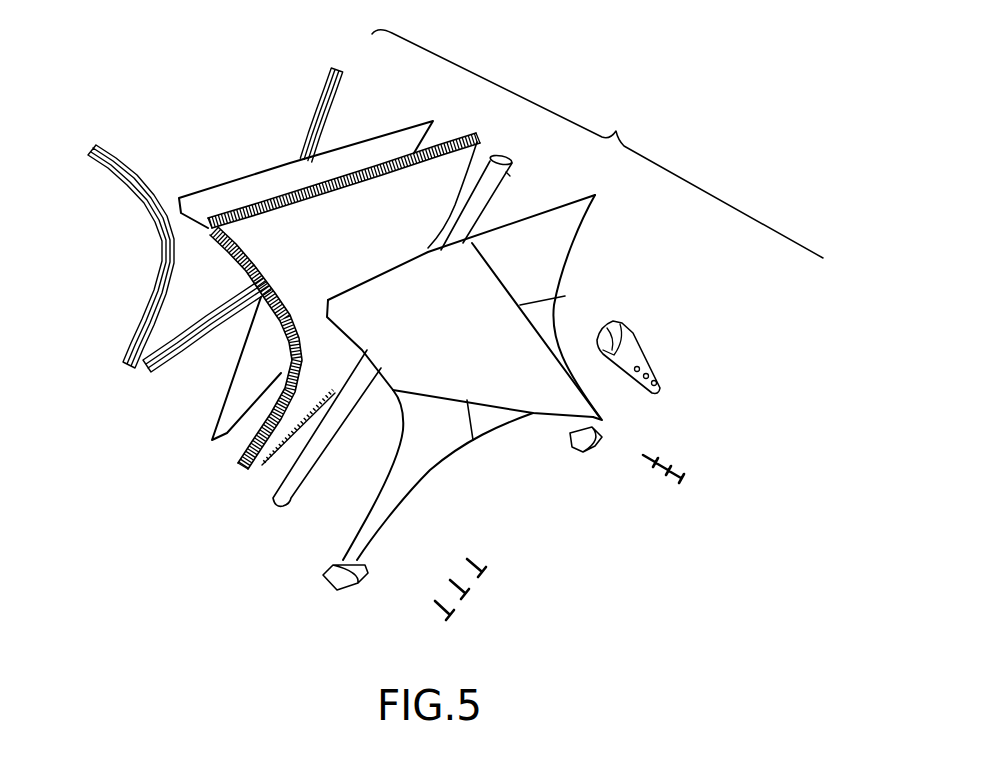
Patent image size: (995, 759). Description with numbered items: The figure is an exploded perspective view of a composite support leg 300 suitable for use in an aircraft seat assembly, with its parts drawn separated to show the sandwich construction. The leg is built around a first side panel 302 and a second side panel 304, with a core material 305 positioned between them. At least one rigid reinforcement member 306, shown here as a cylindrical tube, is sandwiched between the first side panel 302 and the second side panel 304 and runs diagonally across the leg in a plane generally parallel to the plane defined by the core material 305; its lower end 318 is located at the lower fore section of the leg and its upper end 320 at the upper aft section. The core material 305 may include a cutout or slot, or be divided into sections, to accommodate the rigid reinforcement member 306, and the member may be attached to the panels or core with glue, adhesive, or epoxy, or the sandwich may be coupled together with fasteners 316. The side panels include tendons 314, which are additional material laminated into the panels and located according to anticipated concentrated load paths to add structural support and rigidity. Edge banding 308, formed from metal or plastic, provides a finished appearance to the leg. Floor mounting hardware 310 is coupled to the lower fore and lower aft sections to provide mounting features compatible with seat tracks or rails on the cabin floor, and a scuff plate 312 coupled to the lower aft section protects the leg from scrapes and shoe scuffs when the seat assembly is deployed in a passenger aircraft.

The composite support leg 300 is at (597, 144).
The first side panel 302 is at (548, 248).
The second side panel 304 is at (374, 150).
The core material 305 is at (250, 471).
The rigid reinforcement member 306 is at (502, 178).
The edge banding 308 is at (330, 77).
The floor mounting hardware 310 is at (325, 587).
The scuff plate 312 is at (647, 350).
The tendons 314 is at (555, 300).
The fasteners 316 is at (490, 613).
The lower end 318 is at (274, 503).
The upper end 320 is at (500, 155).